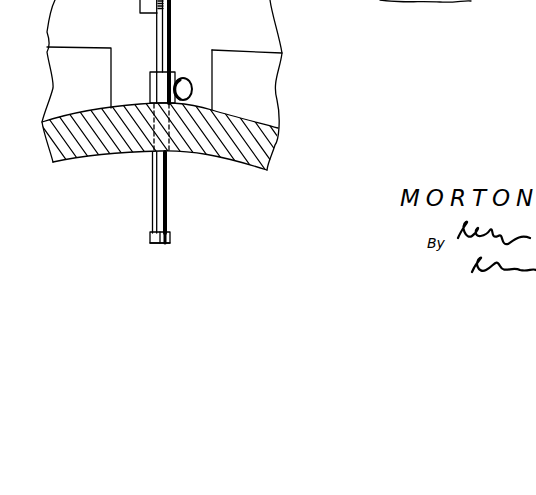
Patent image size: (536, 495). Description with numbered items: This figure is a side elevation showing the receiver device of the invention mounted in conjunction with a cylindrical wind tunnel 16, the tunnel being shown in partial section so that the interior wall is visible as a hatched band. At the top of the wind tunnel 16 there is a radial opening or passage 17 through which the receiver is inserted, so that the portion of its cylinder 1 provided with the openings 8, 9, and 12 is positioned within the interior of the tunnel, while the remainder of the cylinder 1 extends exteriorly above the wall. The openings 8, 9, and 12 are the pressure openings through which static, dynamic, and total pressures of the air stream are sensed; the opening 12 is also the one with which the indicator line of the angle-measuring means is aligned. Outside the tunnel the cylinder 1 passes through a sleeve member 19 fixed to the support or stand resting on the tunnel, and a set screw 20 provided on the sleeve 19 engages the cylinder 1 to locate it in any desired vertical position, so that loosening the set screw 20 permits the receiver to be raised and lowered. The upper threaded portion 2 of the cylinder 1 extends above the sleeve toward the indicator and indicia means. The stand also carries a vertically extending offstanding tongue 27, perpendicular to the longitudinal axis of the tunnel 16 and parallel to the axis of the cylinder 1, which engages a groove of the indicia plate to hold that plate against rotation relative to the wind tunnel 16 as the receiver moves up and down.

The cylinder 1 is at (168, 198).
The threaded stem upper portion 2 is at (212, 7).
The opening 8 is at (170, 240).
The opening 9 is at (150, 238).
The opening 12 is at (155, 245).
The wind tunnel 16 is at (266, 148).
The radial opening 17 is at (177, 156).
The sleeve member 19 is at (152, 76).
The set screw 20 is at (207, 58).
The offstanding tongue 27 is at (471, 0).